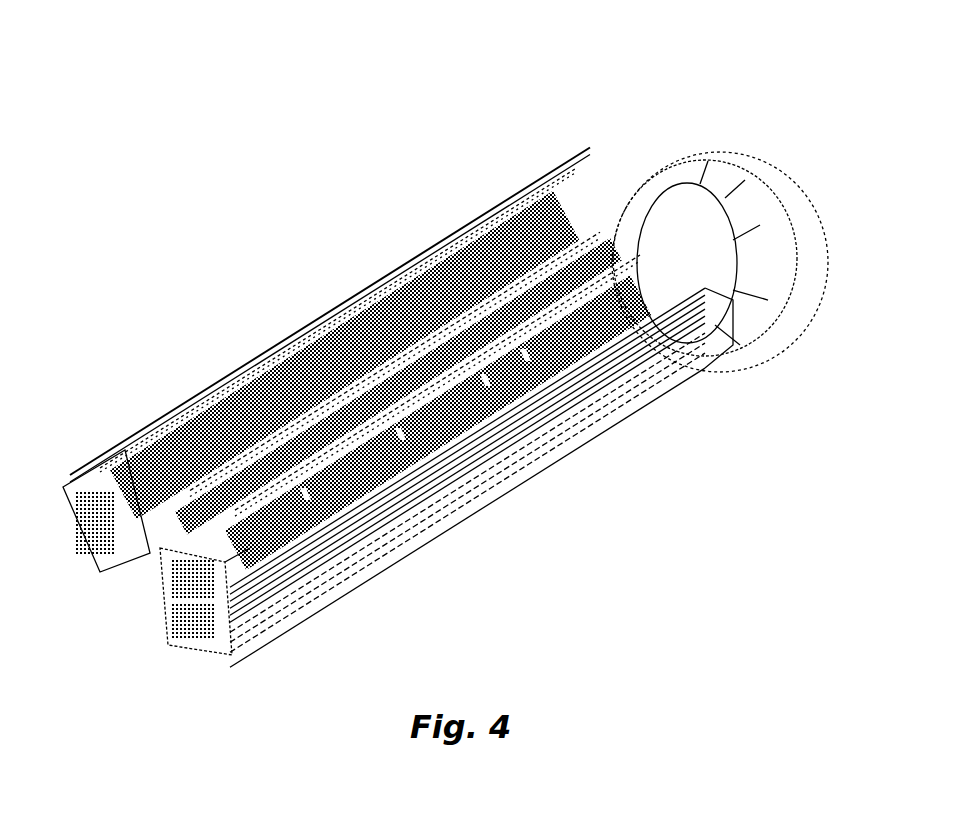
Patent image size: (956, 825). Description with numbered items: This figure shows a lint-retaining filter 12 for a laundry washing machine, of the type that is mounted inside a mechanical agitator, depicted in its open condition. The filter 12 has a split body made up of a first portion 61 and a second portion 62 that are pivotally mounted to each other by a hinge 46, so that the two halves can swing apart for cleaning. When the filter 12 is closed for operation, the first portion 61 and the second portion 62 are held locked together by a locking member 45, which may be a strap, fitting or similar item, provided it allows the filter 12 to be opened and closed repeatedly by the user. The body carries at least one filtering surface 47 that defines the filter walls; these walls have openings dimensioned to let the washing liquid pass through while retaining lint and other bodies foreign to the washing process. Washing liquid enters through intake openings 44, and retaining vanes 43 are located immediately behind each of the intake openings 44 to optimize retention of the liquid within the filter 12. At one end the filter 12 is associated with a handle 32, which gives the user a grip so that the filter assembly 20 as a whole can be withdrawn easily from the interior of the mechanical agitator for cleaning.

The filter assembly 20 is at (305, 65).
The filter 12 is at (380, 258).
The handle 32 is at (780, 177).
The retaining vanes 43 is at (245, 575).
The intake openings 44 is at (250, 353).
The locking member 45 is at (485, 412).
The hinge 46 is at (157, 572).
The filtering surface 47 is at (603, 318).
The first portion 61 is at (708, 352).
The second portion 62 is at (560, 165).